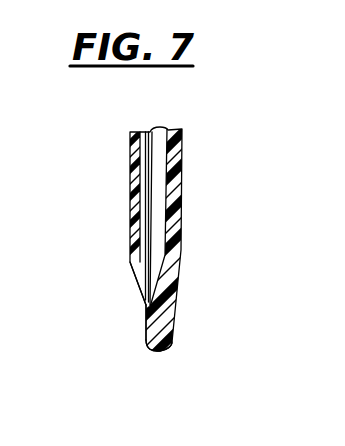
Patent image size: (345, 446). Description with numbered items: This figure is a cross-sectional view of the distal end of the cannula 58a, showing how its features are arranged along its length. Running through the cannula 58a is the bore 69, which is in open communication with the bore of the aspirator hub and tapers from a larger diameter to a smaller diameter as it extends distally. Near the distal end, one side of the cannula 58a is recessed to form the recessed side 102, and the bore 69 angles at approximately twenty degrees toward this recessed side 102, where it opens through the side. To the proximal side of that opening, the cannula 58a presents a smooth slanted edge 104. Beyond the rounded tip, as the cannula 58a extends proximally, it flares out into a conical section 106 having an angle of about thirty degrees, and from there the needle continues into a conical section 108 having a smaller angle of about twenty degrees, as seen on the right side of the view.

The cannula 58a is at (183, 193).
The bore 69 is at (158, 161).
The smooth slanted edge 104 is at (138, 265).
The conical section 108 is at (176, 278).
The recessed side 102 is at (147, 322).
The conical section 106 is at (146, 347).